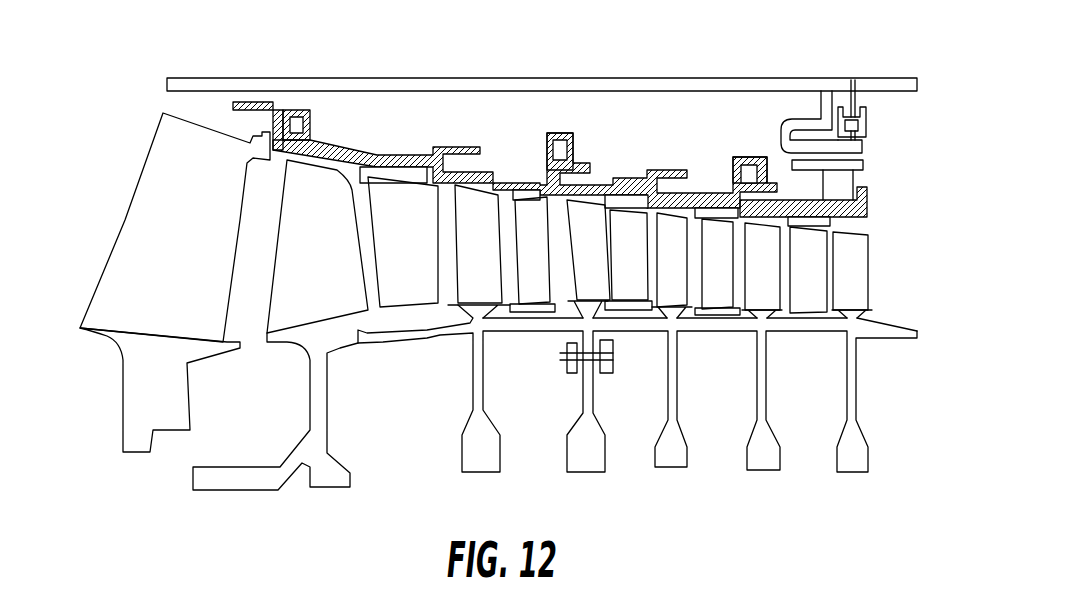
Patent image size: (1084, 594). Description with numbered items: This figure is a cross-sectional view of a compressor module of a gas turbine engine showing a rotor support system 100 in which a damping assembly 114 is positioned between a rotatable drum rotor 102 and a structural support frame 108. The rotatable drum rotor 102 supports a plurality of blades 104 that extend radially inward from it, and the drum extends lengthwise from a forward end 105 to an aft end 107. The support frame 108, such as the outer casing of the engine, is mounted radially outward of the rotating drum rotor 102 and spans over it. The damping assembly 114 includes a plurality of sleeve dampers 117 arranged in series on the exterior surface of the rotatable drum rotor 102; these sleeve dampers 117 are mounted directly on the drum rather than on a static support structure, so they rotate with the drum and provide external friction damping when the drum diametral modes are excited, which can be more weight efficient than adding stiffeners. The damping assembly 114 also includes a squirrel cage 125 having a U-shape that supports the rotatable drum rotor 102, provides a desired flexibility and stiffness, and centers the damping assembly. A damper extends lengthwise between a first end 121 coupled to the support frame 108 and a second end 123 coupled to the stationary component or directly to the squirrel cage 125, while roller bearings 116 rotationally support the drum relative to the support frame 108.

The rotor support system 100 is at (82, 155).
The rotatable drum rotor 102 is at (396, 140).
The blades 104 is at (437, 277).
The forward end 105 is at (240, 102).
The aft end 107 is at (867, 200).
The support frame 108 is at (658, 68).
The damping assembly 114 is at (712, 97).
The roller bearings 116 is at (867, 130).
The sleeve dampers 117 is at (297, 110).
The first end 121 is at (853, 82).
The second end 123 is at (862, 145).
The squirrel cage 125 is at (817, 117).